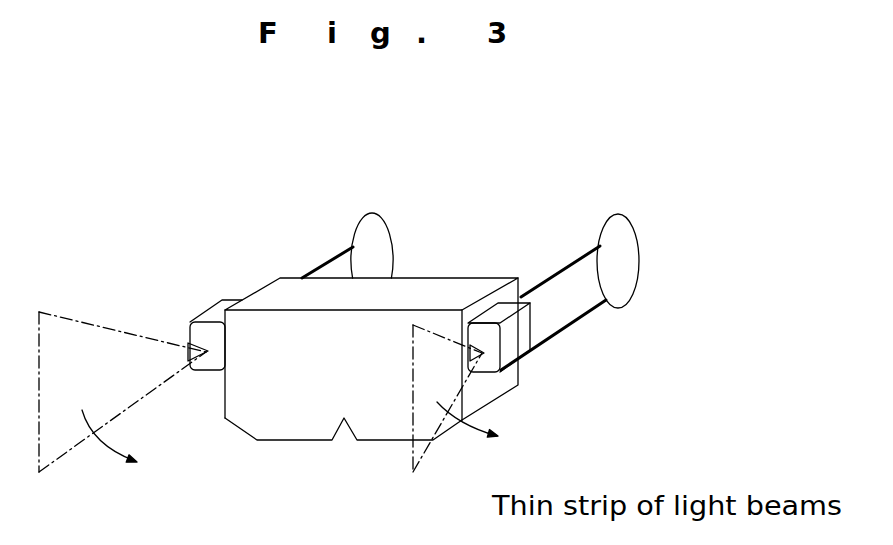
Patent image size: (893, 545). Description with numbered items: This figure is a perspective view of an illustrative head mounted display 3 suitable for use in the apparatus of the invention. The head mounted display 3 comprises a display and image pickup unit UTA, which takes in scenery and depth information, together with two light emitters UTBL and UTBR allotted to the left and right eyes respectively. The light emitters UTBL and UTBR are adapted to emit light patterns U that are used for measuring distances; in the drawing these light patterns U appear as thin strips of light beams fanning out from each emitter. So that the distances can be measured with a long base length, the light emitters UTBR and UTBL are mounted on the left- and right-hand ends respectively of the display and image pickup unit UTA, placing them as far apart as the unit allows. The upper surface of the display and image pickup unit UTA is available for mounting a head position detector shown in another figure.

The HMD 3 is at (233, 212).
The light emitter UTBL is at (202, 363).
The light emitter UTBR is at (518, 333).
The display and image pickup unit UTA is at (285, 427).
The light patterns U is at (85, 430).